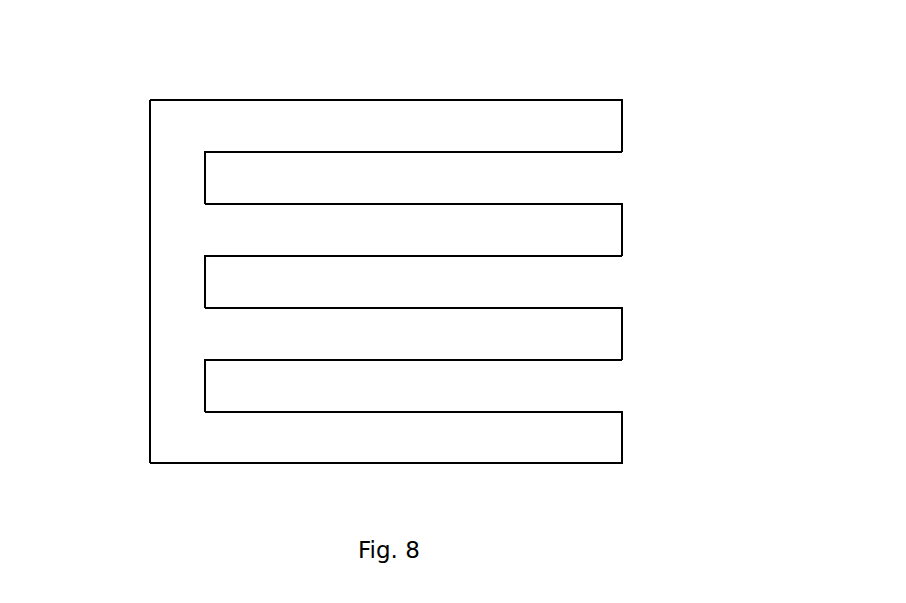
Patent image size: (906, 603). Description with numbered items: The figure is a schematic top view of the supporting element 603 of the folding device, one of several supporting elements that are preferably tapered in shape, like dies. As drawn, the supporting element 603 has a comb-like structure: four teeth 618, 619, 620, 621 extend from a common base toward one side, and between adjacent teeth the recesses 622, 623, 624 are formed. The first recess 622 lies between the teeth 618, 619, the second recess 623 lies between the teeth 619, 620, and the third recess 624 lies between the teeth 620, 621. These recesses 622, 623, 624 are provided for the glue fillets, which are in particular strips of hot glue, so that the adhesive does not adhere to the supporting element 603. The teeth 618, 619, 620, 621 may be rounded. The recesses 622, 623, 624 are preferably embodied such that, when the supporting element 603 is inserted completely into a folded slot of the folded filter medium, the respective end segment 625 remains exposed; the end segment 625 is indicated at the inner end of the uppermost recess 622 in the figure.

The supporting element 603 is at (175, 94).
The tooth 618 is at (597, 131).
The tooth 619 is at (602, 232).
The tooth 620 is at (602, 334).
The tooth 621 is at (602, 446).
The recess 622 is at (608, 177).
The recess 623 is at (595, 292).
The recess 624 is at (595, 394).
The end segment 625 is at (225, 175).